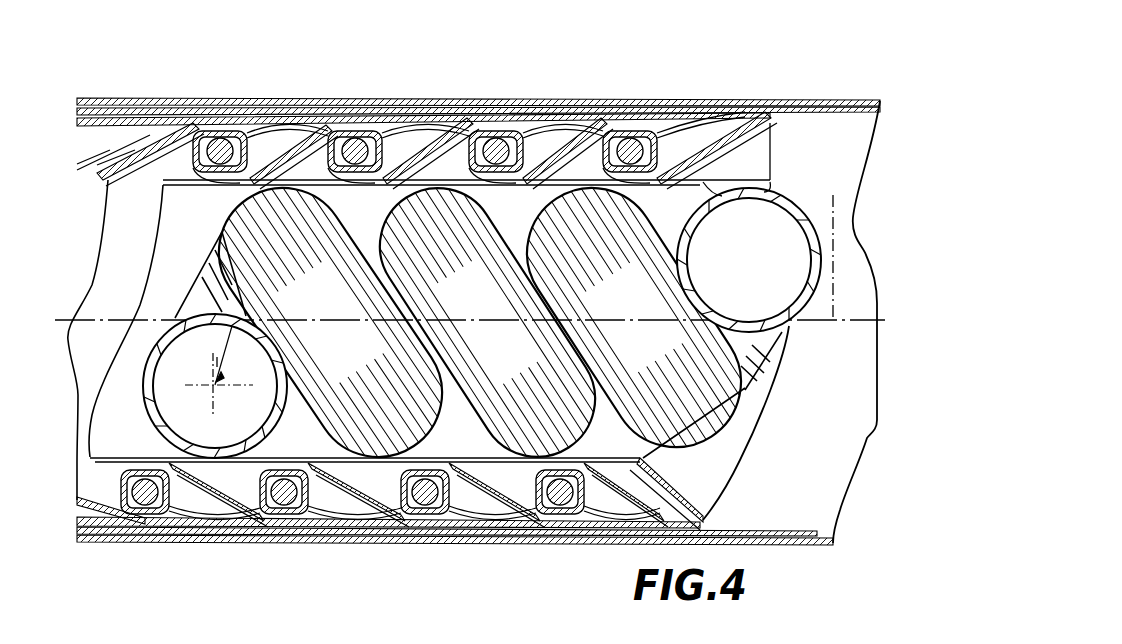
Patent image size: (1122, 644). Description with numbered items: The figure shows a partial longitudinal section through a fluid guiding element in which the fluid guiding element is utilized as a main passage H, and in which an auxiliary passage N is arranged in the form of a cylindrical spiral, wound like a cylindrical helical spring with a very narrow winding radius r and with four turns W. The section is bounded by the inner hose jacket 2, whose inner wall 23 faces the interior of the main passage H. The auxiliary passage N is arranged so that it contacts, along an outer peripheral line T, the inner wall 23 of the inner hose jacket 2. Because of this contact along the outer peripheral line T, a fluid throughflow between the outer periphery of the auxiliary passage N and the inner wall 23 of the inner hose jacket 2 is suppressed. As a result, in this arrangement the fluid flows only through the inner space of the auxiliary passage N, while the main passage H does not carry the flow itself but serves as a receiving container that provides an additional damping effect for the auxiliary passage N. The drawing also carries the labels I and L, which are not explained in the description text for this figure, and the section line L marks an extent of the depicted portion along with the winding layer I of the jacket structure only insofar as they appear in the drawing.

The main passage H is at (256, 101).
The inner wrapping layer I is at (378, 97).
The outer peripheral line T is at (456, 183).
The inner wall 23 is at (572, 186).
The auxiliary passage N is at (730, 225).
The body section L is at (791, 322).
The inner hose jacket 2 is at (160, 186).
The winding radius r is at (219, 370).
The turns W is at (510, 455).